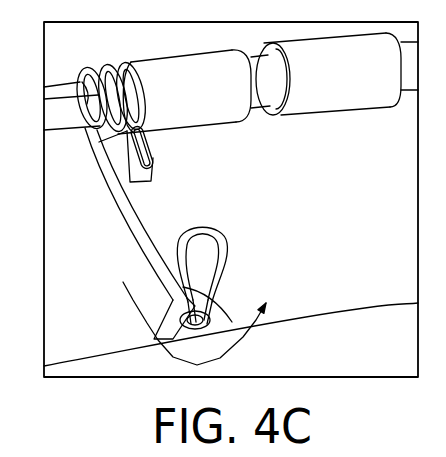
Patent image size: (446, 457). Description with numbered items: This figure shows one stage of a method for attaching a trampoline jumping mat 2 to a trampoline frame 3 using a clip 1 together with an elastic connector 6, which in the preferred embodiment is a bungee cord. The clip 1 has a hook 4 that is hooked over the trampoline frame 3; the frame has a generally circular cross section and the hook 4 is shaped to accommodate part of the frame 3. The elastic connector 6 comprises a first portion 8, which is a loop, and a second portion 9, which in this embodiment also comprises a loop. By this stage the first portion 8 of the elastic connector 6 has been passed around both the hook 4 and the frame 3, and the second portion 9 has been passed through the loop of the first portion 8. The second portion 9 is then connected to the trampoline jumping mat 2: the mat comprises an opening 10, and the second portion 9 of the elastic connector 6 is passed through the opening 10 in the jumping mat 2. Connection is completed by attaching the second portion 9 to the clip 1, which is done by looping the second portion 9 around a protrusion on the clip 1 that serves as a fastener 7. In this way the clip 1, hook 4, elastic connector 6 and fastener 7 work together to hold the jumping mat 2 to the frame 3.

The clip 1 is at (165, 152).
The trampoline jumping mat 2 is at (367, 331).
The trampoline frame 3 is at (251, 96).
The hook 4 is at (104, 104).
The elastic connector 6 is at (135, 232).
The fastener 7 is at (133, 147).
The first portion 8 is at (118, 67).
The second portion 9 is at (236, 231).
The opening 10 is at (212, 317).